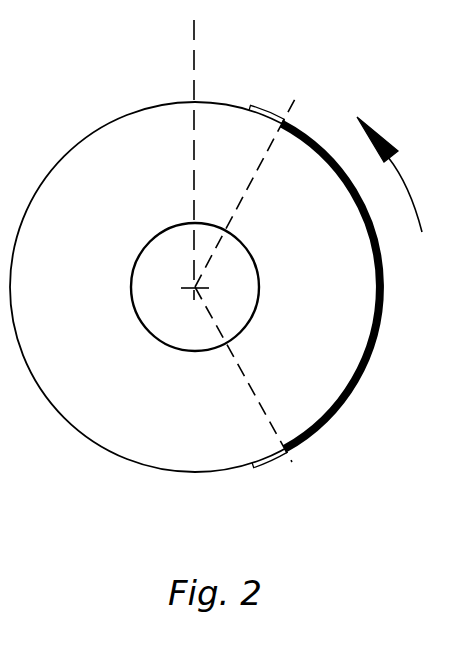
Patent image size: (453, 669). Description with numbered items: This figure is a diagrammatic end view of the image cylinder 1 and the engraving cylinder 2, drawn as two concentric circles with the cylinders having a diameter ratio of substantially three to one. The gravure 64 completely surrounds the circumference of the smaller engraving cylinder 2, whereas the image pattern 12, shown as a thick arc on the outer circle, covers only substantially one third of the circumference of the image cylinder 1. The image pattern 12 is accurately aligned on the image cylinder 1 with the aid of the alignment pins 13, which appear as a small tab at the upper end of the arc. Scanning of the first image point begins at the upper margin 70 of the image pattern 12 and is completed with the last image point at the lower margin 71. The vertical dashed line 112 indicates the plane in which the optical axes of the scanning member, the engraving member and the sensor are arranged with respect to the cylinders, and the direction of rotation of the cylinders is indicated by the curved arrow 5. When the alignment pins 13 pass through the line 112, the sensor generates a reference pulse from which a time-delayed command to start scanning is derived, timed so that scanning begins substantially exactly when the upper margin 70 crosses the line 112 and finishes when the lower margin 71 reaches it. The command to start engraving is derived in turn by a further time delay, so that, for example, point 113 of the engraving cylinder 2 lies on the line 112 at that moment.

The image cylinder 1 is at (146, 470).
The engraving cylinder 2 is at (174, 327).
The arrow 5 is at (410, 188).
The image pattern 12 is at (383, 317).
The alignment pins 13 is at (270, 106).
The gravure 64 is at (142, 327).
The upper margin 70 is at (289, 121).
The lower margin 71 is at (291, 455).
The dashed line 112 is at (194, 66).
The point of the engraving cylinder 113 is at (247, 256).